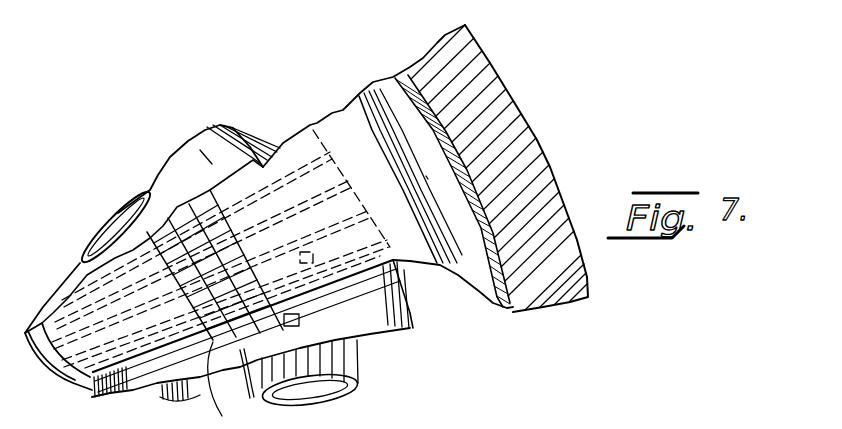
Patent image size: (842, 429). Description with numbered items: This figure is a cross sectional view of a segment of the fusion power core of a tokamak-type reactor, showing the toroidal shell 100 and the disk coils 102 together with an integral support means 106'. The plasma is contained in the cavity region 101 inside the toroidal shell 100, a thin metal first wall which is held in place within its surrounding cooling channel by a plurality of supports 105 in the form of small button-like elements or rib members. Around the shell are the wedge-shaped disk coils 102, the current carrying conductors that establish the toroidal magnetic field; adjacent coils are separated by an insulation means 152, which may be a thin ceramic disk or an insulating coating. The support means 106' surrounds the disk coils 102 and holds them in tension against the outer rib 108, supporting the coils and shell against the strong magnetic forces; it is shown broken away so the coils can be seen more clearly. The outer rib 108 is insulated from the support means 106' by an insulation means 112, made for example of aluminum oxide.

The toroidal shell 100 is at (190, 158).
The supports 105 is at (187, 277).
The disk coils 102 is at (308, 145).
The integral support means 106' is at (387, 162).
The insulation means 112 is at (407, 68).
The outer rib 108 is at (493, 83).
The cavity region 101 is at (333, 388).
The insulation means 152 is at (234, 385).